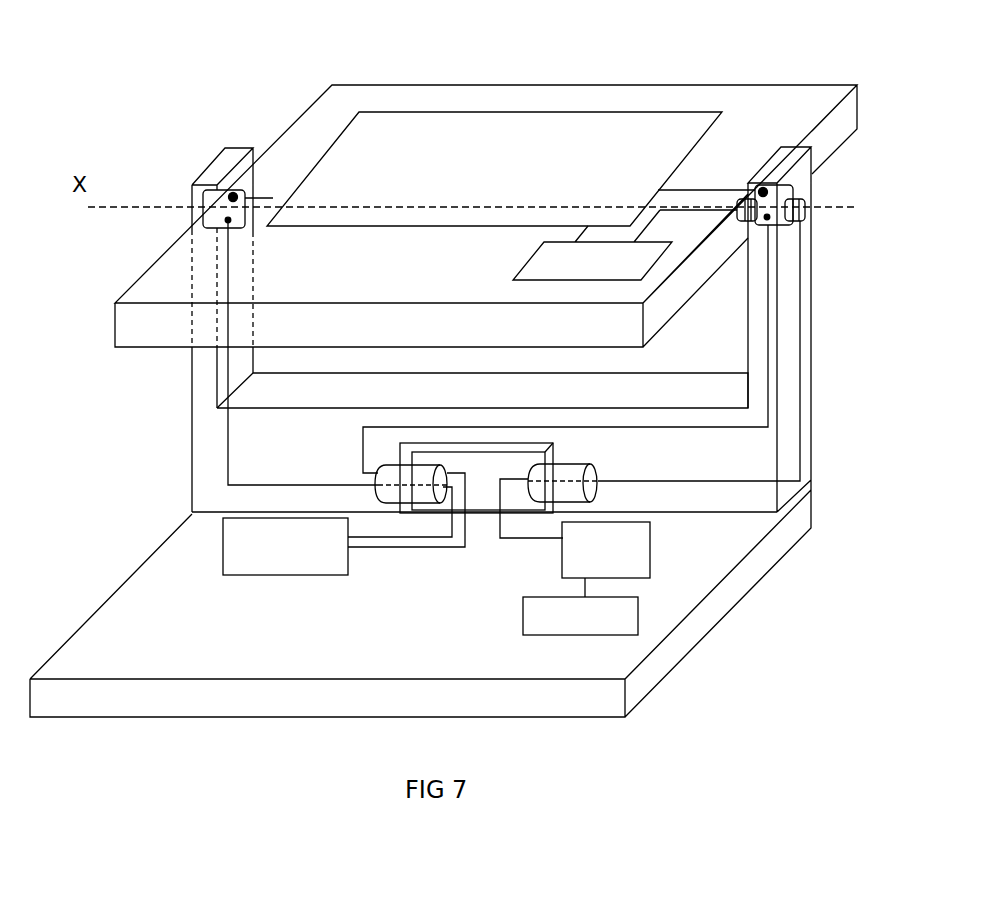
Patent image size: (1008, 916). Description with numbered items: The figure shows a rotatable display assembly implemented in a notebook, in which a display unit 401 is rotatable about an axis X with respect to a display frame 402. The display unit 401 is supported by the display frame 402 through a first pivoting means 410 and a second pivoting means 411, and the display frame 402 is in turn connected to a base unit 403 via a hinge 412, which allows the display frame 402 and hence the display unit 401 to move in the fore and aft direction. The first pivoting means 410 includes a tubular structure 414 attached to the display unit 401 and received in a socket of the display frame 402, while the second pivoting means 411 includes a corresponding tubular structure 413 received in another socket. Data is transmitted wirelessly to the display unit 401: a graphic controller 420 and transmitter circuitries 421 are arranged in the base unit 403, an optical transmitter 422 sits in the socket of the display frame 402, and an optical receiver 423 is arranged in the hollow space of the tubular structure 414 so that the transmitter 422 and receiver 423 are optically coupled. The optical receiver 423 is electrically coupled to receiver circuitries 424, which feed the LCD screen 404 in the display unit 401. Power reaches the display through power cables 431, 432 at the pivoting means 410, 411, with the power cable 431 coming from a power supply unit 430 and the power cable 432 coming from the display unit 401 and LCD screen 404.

The display unit 401 is at (440, 85).
The display frame 402 is at (812, 343).
The base unit 403 is at (122, 664).
The LCD screen 404 is at (666, 153).
The first pivoting means 410 is at (832, 237).
The second pivoting means 411 is at (167, 188).
The hinge 412 is at (612, 510).
The tubular structure 413 is at (200, 185).
The tubular structure 414 is at (780, 185).
The graphic controller 420 is at (631, 631).
The transmitter circuitries 421 is at (641, 557).
The optical transmitter 422 is at (812, 212).
The optical receiver 423 is at (737, 212).
The receiver circuitries 424 is at (524, 272).
The power supply unit 430 is at (341, 553).
The power cable 431 is at (327, 485).
The power cable 432 is at (273, 198).